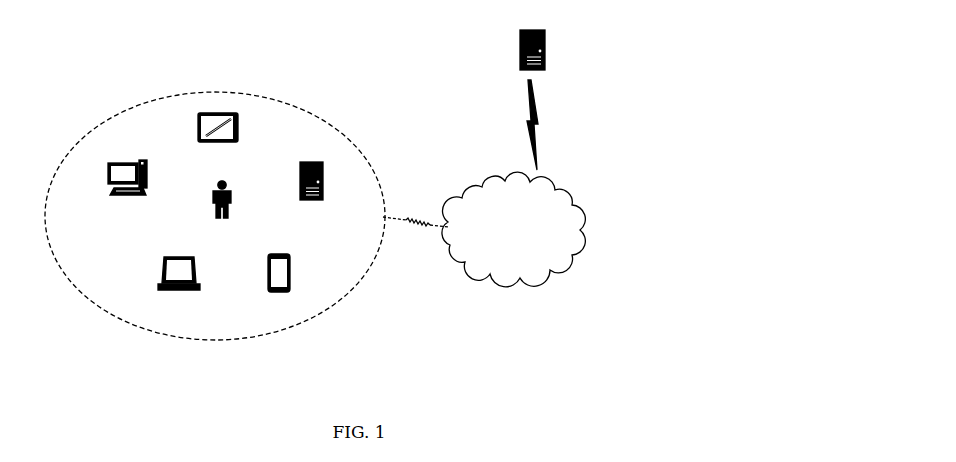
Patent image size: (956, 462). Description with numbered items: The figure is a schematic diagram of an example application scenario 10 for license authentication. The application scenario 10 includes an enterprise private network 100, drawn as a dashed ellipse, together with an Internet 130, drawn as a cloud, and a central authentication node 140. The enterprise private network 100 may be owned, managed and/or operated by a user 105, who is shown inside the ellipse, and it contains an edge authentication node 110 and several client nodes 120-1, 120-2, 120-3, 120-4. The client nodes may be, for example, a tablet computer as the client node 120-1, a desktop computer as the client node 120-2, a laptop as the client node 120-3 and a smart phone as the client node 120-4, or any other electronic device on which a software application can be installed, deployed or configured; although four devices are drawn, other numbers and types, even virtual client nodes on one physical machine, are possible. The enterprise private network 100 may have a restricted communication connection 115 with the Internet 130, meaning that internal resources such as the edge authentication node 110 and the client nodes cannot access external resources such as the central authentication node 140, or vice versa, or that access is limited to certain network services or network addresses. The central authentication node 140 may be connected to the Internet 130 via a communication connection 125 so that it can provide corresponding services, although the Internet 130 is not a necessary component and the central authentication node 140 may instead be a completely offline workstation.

The application scenario 10 is at (351, 27).
The enterprise private network 100 is at (80, 246).
The user 105 is at (241, 239).
The edge authentication node 110 is at (338, 189).
The restricted communication connection 115 is at (435, 213).
The client node 120-1 is at (243, 159).
The client node 120-2 is at (150, 213).
The client node 120-3 is at (158, 309).
The client node 120-4 is at (255, 309).
The communication connection 125 is at (555, 143).
The Internet 130 is at (534, 238).
The central authentication node 140 is at (570, 53).